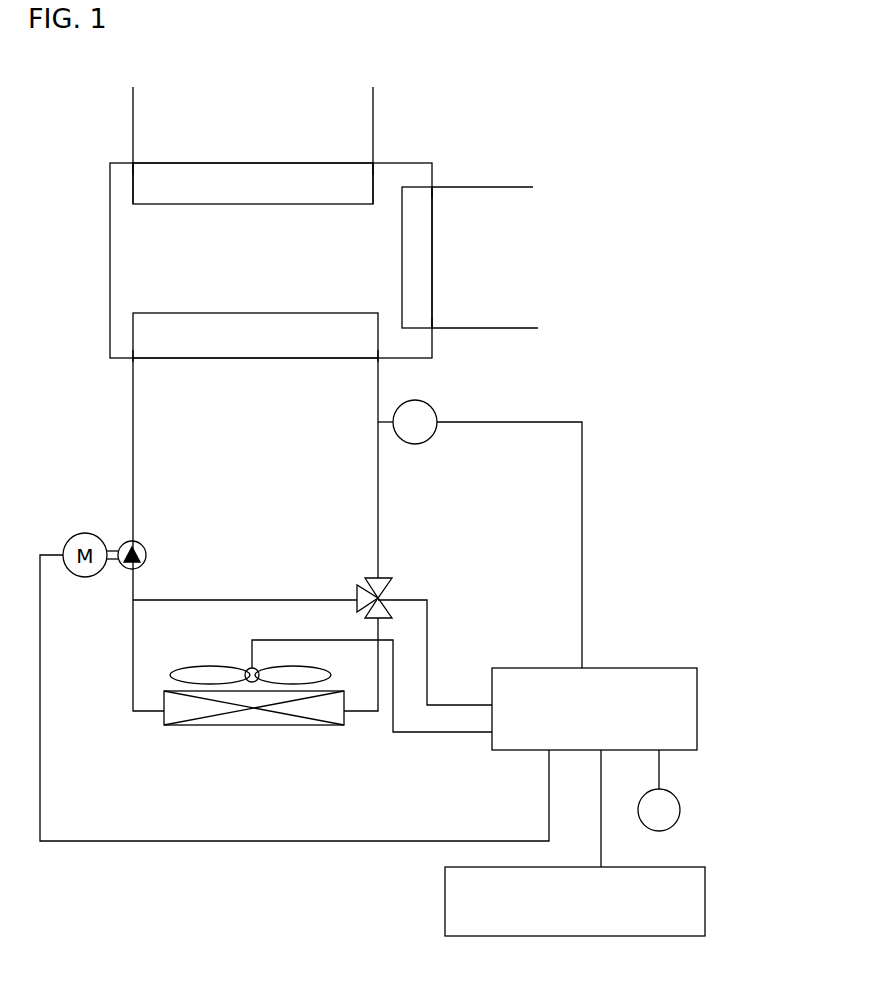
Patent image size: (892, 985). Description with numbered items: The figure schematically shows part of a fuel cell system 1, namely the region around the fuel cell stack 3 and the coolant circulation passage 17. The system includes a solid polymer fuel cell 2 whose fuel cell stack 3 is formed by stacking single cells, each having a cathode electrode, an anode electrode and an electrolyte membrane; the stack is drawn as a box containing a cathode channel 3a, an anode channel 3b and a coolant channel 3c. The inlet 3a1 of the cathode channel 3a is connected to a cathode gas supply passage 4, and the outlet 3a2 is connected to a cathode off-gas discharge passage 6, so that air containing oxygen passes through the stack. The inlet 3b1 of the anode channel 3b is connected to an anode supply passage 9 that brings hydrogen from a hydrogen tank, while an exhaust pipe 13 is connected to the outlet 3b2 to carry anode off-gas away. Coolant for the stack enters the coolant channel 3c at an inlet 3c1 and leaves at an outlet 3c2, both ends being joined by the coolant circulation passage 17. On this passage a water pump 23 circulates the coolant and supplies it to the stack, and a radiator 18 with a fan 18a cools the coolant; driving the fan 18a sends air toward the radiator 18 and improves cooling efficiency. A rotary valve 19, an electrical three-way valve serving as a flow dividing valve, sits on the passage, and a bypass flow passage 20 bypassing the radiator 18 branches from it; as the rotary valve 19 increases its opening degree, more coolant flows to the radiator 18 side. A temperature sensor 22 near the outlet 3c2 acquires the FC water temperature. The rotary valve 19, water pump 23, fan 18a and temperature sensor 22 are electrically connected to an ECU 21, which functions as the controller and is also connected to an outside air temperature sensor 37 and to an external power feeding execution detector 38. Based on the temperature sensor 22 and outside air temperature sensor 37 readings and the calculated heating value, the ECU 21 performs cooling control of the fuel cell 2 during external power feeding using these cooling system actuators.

The fuel cell system 1 is at (747, 963).
The solid polymer fuel cell 2 is at (432, 163).
The fuel cell stack 3 is at (306, 238).
The cathode channel 3a is at (402, 282).
The inlet of the cathode channel 3a1 is at (433, 188).
The outlet of the cathode channel 3a2 is at (433, 327).
The anode channel 3b is at (218, 204).
The inlet of the anode channel 3b1 is at (372, 163).
The outlet of the anode channel 3b2 is at (135, 163).
The coolant channel 3c is at (260, 313).
The inlet of the coolant channel 3c1 is at (134, 359).
The outlet of the coolant channel 3c2 is at (379, 359).
The cathode gas supply passage 4 is at (497, 187).
The cathode off-gas discharge passage 6 is at (523, 328).
The anode supply passage 9 is at (375, 113).
The exhaust pipe 13 is at (135, 113).
The coolant circulation passage 17 is at (133, 452).
The radiator 18 is at (182, 723).
The fan 18a is at (248, 667).
The rotary valve 19 is at (357, 592).
The bypass flow passage 20 is at (260, 600).
The ECU 21 is at (675, 668).
The temperature sensor 22 is at (437, 410).
The water pump 23 is at (127, 543).
The outside air temperature sensor 37 is at (675, 800).
The external power feeding execution detector 38 is at (707, 907).